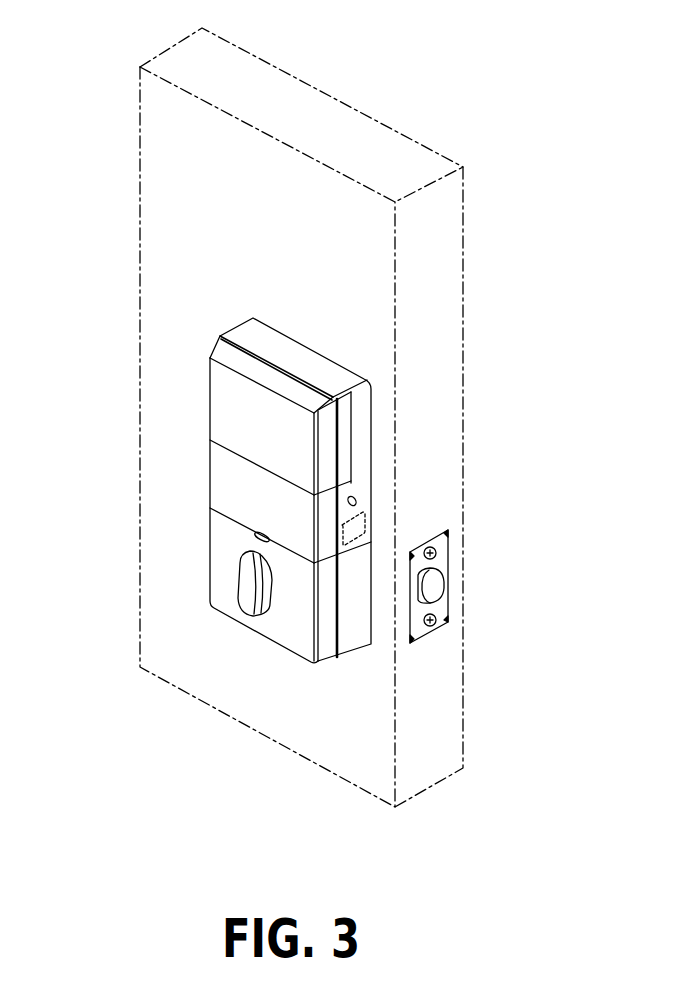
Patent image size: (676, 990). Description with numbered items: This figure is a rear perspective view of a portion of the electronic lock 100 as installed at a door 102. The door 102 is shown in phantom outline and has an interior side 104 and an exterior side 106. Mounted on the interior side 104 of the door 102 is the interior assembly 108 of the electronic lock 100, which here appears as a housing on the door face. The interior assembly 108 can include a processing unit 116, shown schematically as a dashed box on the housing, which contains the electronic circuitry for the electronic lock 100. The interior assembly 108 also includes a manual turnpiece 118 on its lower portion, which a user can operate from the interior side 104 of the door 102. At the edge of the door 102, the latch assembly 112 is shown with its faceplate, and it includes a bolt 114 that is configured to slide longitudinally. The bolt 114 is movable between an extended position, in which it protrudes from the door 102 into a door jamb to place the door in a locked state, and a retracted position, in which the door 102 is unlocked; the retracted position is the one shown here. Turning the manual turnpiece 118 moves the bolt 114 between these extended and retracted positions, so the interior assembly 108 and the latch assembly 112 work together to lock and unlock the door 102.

The electronic lock 100 is at (174, 420).
The door 102 is at (293, 118).
The interior side 104 is at (165, 133).
The exterior side 106 is at (465, 207).
The interior assembly 108 is at (305, 337).
The latch assembly 112 is at (431, 641).
The bolt 114 is at (432, 590).
The processing unit 116 is at (338, 529).
The manual turnpiece 118 is at (238, 574).